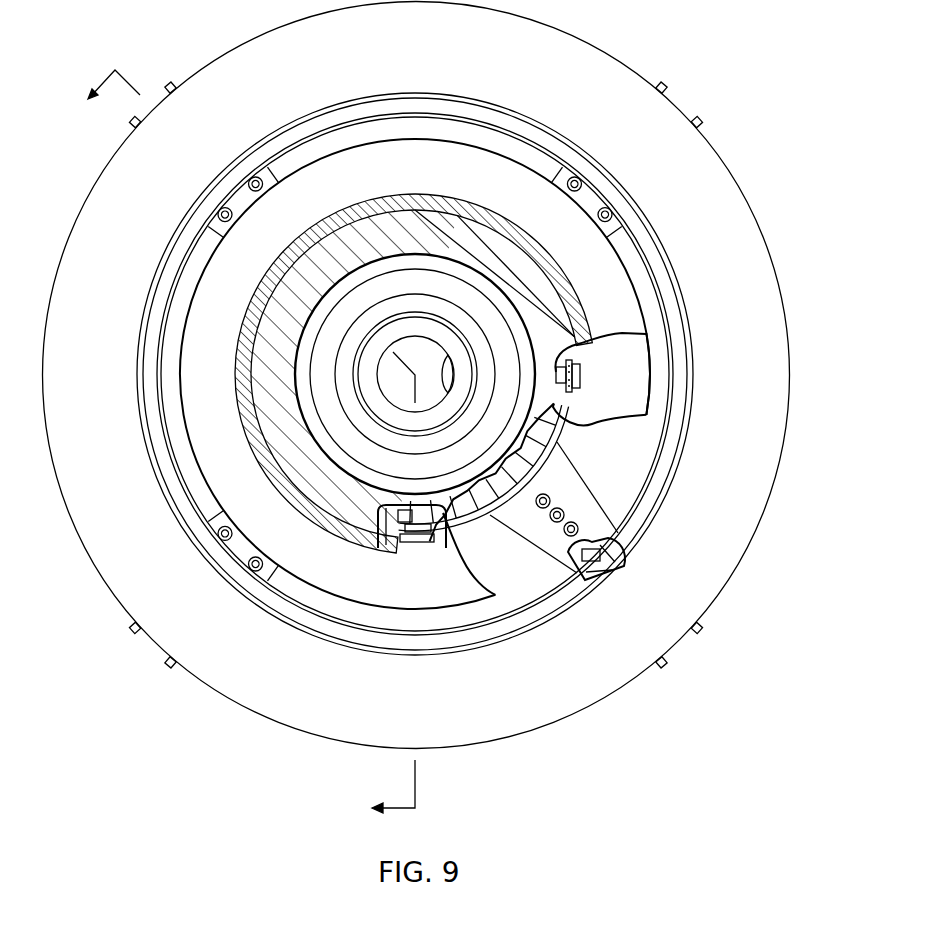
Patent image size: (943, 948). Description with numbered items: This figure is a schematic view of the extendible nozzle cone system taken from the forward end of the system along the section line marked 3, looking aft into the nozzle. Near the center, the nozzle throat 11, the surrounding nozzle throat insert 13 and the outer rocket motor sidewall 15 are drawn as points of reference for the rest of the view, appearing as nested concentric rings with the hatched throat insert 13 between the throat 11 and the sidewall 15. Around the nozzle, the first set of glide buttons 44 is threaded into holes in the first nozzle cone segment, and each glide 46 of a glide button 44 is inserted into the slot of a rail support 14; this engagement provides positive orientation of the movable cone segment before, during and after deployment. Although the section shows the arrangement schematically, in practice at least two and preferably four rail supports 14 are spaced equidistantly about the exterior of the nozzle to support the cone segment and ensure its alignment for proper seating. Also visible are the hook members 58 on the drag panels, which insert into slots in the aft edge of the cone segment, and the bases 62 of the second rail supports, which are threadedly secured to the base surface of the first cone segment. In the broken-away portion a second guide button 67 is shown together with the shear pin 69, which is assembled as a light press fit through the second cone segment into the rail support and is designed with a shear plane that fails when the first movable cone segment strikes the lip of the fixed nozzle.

The section line 3- 3 is at (242, 451).
The nozzle throat 11 is at (421, 375).
The nozzle throat insert 13 is at (474, 253).
The rail support 14 is at (394, 530).
The rocket motor sidewall 15 is at (462, 205).
The glide button 44 is at (580, 373).
The glide 46 is at (580, 392).
The hook member 58 is at (138, 118).
The base 62 is at (240, 193).
The second guide button 67 is at (624, 553).
The shear pin 69 is at (603, 572).